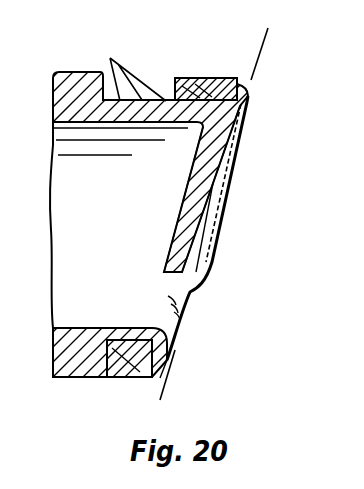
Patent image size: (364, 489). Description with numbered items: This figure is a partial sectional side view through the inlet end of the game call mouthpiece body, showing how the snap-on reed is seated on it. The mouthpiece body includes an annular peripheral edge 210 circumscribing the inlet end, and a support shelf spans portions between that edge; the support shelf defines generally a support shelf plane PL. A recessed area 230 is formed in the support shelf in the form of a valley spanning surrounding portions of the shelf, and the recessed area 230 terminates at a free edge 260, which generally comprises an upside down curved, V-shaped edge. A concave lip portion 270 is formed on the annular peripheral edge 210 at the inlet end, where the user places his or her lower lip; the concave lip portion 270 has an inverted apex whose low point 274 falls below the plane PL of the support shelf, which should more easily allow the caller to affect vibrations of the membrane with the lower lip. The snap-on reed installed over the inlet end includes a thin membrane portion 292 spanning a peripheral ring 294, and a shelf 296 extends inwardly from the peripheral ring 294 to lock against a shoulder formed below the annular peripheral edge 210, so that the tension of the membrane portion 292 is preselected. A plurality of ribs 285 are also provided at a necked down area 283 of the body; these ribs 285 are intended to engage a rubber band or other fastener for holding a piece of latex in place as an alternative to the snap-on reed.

The annular peripheral edge 210 is at (200, 78).
The recessed area 230 is at (194, 210).
The free edge 260 is at (170, 246).
The concave lip portion 270 is at (192, 303).
The low point 274 is at (166, 356).
The necked down area 283 is at (143, 73).
The ribs 285 is at (118, 70).
The membrane portion 292 is at (238, 163).
The peripheral ring 294 is at (225, 78).
The shelf 296 is at (180, 78).
The support shelf plane PL is at (218, 216).